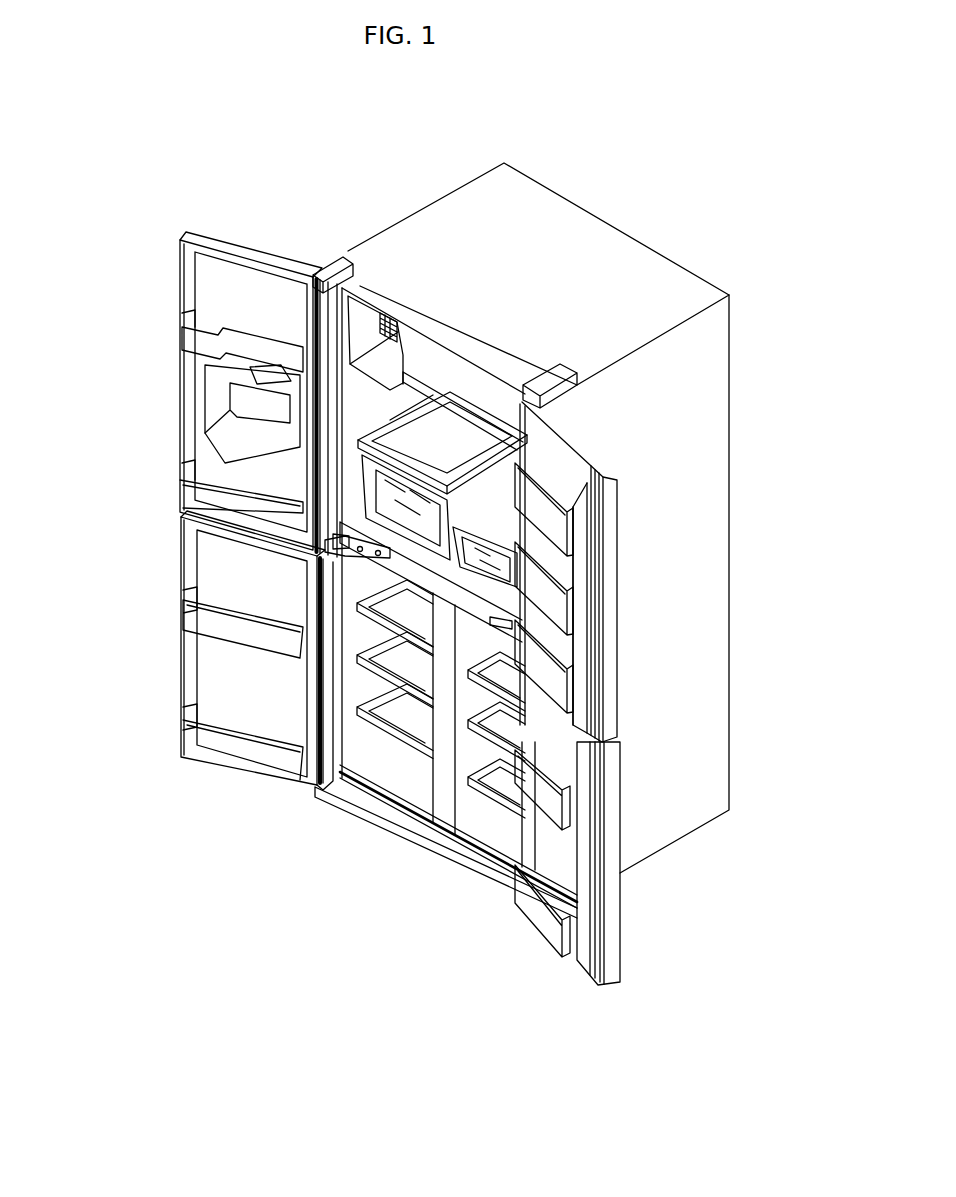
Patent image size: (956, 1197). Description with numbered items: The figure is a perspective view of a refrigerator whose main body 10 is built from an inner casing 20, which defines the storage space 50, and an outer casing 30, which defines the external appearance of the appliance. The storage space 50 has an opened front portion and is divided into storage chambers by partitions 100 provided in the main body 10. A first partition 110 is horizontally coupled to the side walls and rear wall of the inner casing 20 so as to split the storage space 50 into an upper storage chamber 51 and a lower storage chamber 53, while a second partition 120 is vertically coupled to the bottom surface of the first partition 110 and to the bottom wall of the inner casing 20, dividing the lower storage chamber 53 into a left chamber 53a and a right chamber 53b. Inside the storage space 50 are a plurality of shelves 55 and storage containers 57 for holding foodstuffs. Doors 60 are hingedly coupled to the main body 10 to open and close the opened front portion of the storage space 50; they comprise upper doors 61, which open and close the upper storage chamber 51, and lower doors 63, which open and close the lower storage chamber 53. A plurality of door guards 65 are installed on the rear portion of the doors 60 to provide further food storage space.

The main body 10 is at (580, 193).
The inner casing 20 is at (353, 381).
The outer casing 30 is at (437, 225).
The storage space 50 is at (340, 957).
The upper storage chamber 51 is at (506, 490).
The lower storage chamber 53 is at (390, 923).
The left chamber 53a is at (413, 714).
The right chamber 53b is at (477, 750).
The shelves 55 is at (363, 422).
The storage containers 57 is at (378, 566).
The doors 60 is at (83, 493).
The upper doors 61 is at (177, 466).
The lower doors 63 is at (177, 540).
The door guards 65 is at (543, 487).
The partitions 100 is at (82, 667).
The first partition 110 is at (390, 508).
The second partition 120 is at (428, 663).